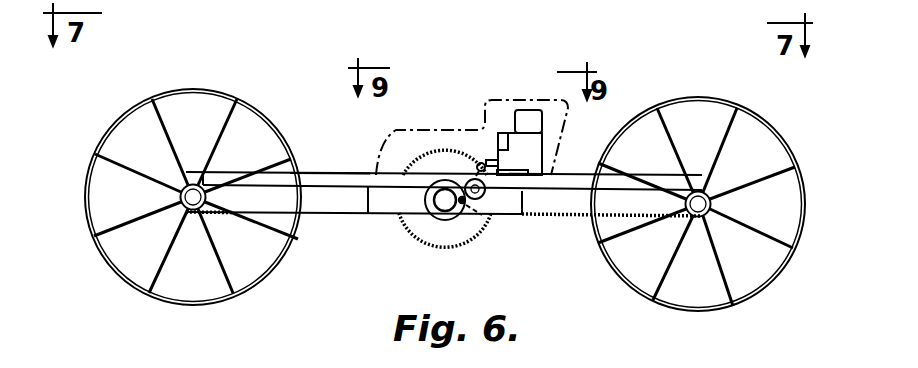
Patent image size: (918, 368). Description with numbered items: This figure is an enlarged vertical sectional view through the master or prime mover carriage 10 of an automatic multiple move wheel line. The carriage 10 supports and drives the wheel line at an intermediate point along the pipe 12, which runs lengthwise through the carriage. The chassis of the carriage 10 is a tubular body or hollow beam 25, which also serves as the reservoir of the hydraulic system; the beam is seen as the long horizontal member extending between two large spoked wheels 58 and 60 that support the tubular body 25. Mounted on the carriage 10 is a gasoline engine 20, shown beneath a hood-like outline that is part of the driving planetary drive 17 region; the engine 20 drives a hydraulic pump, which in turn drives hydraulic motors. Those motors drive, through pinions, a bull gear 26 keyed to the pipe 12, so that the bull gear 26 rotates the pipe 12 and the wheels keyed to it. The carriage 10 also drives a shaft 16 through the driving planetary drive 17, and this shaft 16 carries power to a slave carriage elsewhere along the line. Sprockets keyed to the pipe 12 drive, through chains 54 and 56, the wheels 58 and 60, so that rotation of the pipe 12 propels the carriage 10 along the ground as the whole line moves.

The master or prime mover carriage 10 is at (302, 80).
The pipe 12 is at (443, 214).
The shaft 16 is at (459, 216).
The driving planetary drive 17 is at (524, 84).
The gasoline engine 20 is at (533, 110).
The tubular body or hollow beam 25 is at (362, 175).
The bull gear 26 is at (414, 243).
The chain 54 is at (318, 214).
The chain 56 is at (571, 217).
The wheel 58 is at (272, 273).
The wheel 60 is at (636, 293).